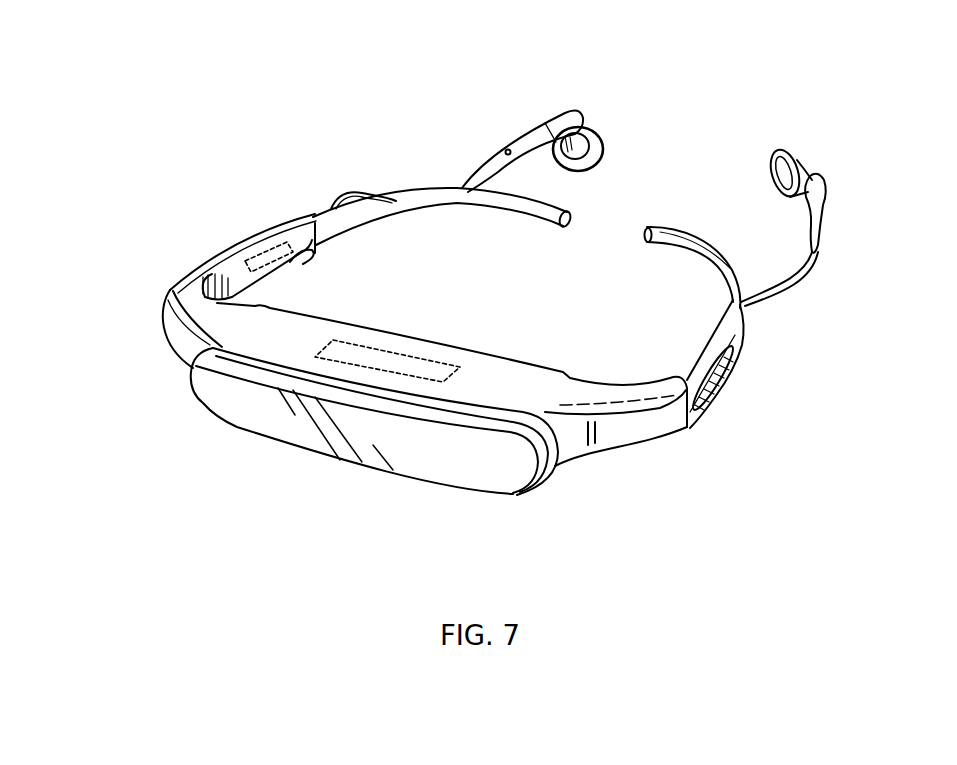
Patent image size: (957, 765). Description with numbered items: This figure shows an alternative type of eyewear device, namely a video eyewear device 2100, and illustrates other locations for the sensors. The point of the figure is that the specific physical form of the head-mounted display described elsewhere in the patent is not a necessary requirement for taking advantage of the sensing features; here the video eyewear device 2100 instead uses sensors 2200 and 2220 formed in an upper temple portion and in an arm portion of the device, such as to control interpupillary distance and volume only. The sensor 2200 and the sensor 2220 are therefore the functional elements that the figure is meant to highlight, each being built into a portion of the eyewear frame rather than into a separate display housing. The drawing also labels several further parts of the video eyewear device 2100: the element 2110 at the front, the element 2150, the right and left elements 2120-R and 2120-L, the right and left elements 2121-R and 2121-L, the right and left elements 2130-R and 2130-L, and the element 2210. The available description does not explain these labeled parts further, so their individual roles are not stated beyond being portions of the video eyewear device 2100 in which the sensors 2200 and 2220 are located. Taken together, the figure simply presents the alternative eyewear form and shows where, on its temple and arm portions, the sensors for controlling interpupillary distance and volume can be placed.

The video eyewear device 2100 is at (738, 117).
The display / lens unit 2110 is at (480, 477).
The frame front portion 2150 is at (503, 373).
The right frame end portion 2120-R is at (167, 320).
The left frame end portion 2120-L is at (625, 433).
The right temple 2121-R is at (243, 245).
The left temple 2121-L is at (737, 323).
The right earphone 2130-R is at (535, 137).
The left earphone 2130-L is at (818, 200).
The sensor 2200 is at (425, 358).
The touch sensor 2210 is at (716, 397).
The sensor 2220 is at (282, 260).